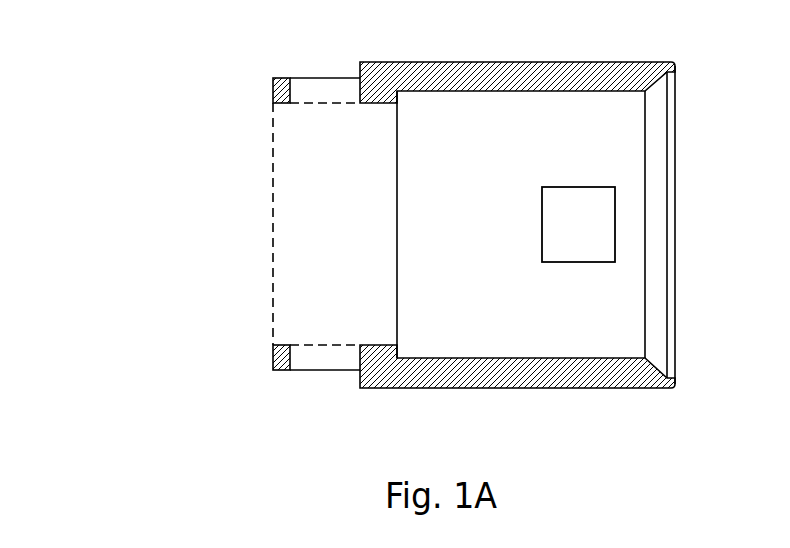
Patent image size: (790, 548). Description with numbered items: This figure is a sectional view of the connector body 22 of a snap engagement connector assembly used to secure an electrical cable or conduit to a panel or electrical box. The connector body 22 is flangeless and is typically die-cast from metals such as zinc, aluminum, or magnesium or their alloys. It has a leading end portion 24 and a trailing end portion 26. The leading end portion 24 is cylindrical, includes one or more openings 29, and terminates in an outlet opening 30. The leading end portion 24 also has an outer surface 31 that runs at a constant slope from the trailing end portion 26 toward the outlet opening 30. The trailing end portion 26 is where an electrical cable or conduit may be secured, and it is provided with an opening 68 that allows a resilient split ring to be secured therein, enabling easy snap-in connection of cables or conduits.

The connector body 22 is at (222, 378).
The leading end portion 24 is at (358, 398).
The trailing end portion 26 is at (675, 398).
The openings 29 is at (333, 91).
The outlet opening 30 is at (281, 208).
The outer surface 31 is at (300, 66).
The opening 68 is at (592, 242).